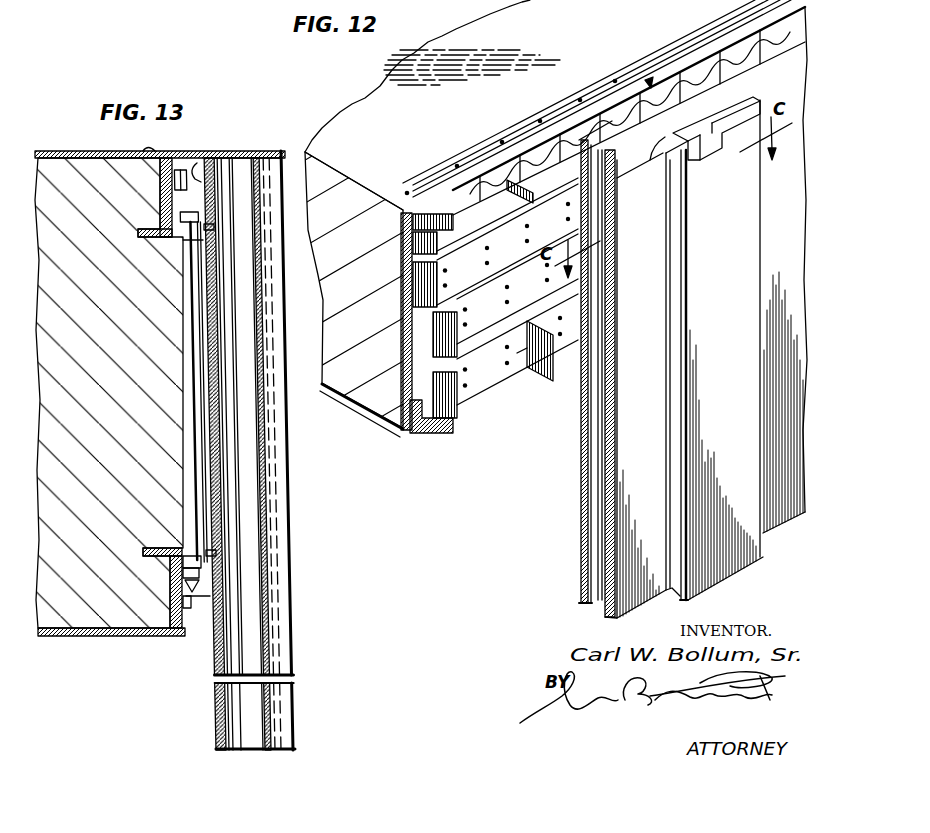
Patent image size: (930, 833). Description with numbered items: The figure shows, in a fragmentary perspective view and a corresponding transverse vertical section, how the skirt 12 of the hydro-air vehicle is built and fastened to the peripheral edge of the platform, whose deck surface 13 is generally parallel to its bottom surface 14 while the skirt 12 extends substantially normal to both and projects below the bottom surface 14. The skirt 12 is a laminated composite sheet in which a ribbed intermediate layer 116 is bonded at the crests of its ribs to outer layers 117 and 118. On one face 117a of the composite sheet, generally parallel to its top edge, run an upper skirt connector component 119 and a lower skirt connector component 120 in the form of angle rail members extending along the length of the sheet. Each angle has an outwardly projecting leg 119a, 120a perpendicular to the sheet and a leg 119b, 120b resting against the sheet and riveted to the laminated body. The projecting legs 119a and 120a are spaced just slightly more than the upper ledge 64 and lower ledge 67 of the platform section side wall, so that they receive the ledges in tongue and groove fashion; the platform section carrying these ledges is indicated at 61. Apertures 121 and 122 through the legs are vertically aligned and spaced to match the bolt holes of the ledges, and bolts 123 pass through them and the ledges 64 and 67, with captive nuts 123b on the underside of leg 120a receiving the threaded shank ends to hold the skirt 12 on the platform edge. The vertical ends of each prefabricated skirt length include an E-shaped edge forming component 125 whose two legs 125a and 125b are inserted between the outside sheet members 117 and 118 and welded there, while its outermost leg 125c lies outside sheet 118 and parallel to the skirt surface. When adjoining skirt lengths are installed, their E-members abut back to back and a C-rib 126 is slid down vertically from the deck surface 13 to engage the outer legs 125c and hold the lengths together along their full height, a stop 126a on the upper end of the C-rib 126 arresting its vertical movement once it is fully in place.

In FIG. 13, the skirt 12 is at (243, 626).
In FIG. 12, the skirt 12 is at (592, 472).
In FIG. 13, the deck surface 13 is at (160, 388).
In FIG. 12, the deck surface 13 is at (358, 117).
In FIG. 13, the bottom surface 14 is at (111, 632).
In FIG. 12, the bottom surface 14 is at (358, 408).
In FIG. 12, the board panel 61 is at (503, 311).
In FIG. 13, the upper ledge 64 is at (215, 245).
In FIG. 12, the upper ledge 64 is at (453, 227).
In FIG. 13, the lower ledge 67 is at (212, 563).
In FIG. 12, the lower ledge 67 is at (432, 420).
In FIG. 13, the intermediate layer 116 is at (238, 492).
In FIG. 12, the intermediate layer 116 is at (723, 67).
In FIG. 13, the outer layer 117 is at (215, 655).
In FIG. 12, the outer layer 117 is at (617, 118).
In FIG. 12, the face of composite sheet 117a is at (650, 84).
In FIG. 13, the outer layer 118 is at (262, 468).
In FIG. 12, the outer layer 118 is at (615, 412).
In FIG. 12, the upper skirt connector component 119 is at (558, 173).
In FIG. 13, the leg 119a is at (175, 243).
In FIG. 12, the leg 119a is at (517, 193).
In FIG. 13, the leg 119b is at (200, 166).
In FIG. 12, the lower skirt connector component 120 is at (552, 362).
In FIG. 13, the leg 120a is at (180, 548).
In FIG. 12, the leg 120a is at (517, 353).
In FIG. 13, the leg 120b is at (210, 597).
In FIG. 13, the aperture 121 is at (214, 228).
In FIG. 13, the aperture 122 is at (217, 552).
In FIG. 13, the bolt 123 is at (193, 439).
In FIG. 13, the captive nut 123b is at (213, 571).
In FIG. 12, the E-shaped edge forming component 125 is at (713, 128).
In FIG. 12, the leg 125a is at (620, 112).
In FIG. 12, the leg 125b is at (670, 100).
In FIG. 12, the outermost leg 125c is at (661, 140).
In FIG. 13, the C-rib 126 is at (280, 711).
In FIG. 12, the C-rib 126 is at (700, 260).
In FIG. 12, the stop 126a is at (737, 97).